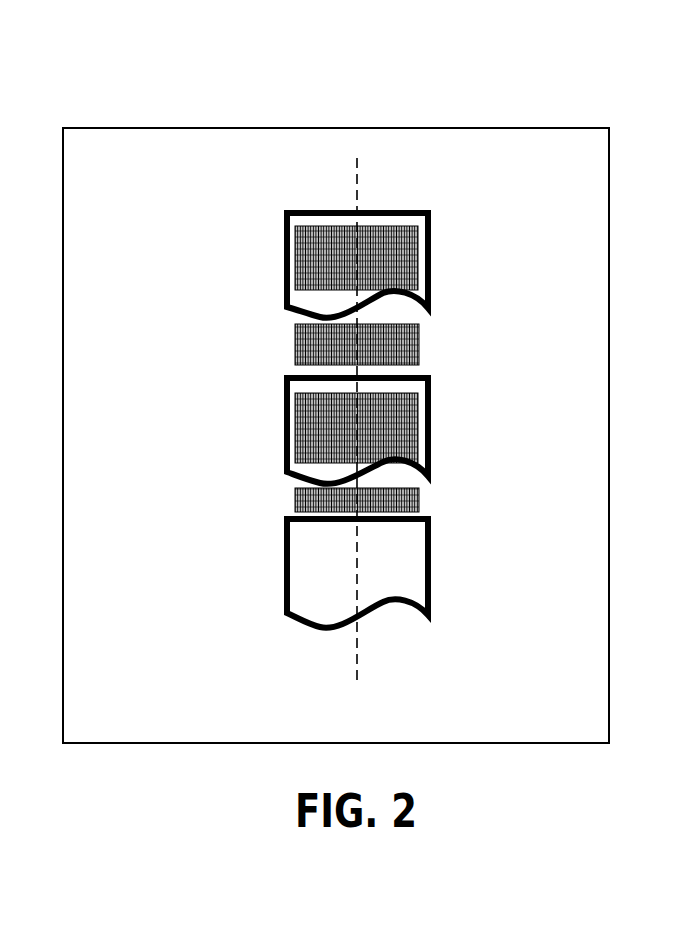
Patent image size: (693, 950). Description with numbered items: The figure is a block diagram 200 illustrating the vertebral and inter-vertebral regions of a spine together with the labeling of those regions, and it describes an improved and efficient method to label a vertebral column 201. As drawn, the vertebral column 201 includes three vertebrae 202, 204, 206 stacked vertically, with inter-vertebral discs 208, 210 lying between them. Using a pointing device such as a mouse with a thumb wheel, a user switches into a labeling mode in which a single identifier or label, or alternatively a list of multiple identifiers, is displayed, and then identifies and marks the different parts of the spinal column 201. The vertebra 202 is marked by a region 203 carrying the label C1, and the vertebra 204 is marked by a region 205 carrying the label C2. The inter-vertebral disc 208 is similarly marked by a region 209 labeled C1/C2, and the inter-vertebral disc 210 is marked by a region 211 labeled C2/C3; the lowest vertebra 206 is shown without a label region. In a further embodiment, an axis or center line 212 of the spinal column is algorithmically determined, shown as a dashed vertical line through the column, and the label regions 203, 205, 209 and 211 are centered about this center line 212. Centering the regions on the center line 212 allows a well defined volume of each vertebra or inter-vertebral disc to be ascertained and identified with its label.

The block diagram 200 is at (423, 98).
The vertebral column 201 is at (282, 187).
The vertebra 202 is at (287, 253).
The region 203 is at (385, 268).
The vertebra 204 is at (287, 420).
The region 205 is at (398, 415).
The vertebra 206 is at (287, 598).
The inter-vertebral disc 208 is at (319, 344).
The region 209 is at (400, 345).
The inter-vertebral disc 210 is at (319, 502).
The region 211 is at (402, 496).
The center line 212 is at (358, 182).